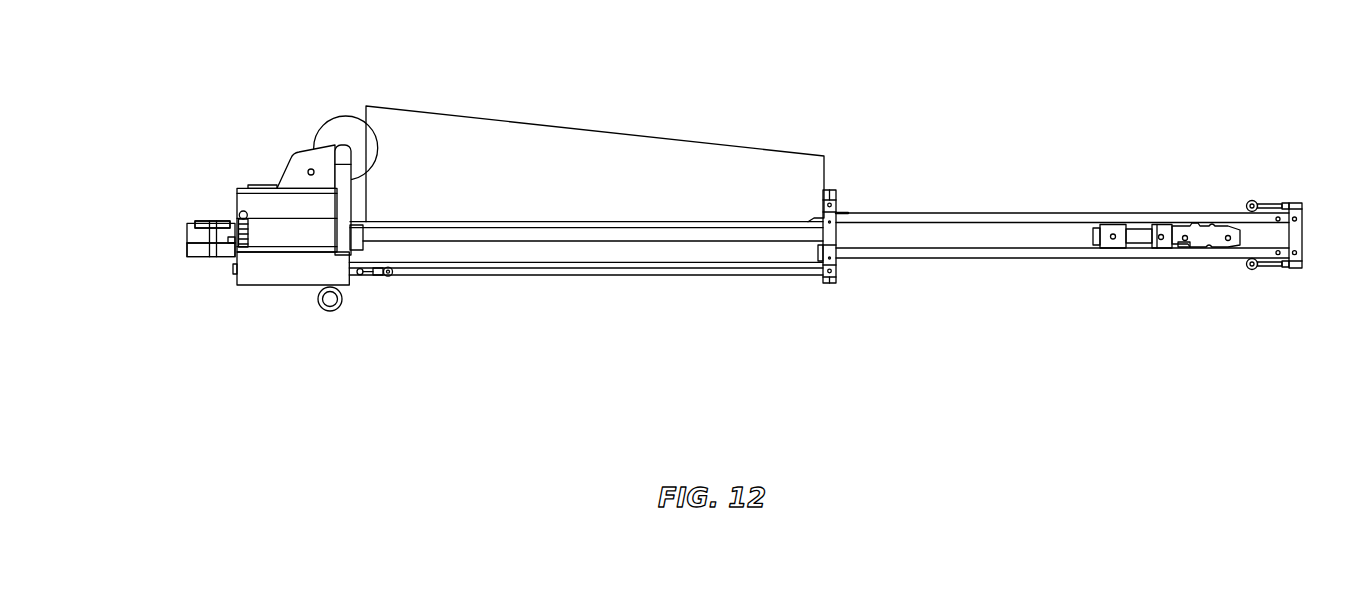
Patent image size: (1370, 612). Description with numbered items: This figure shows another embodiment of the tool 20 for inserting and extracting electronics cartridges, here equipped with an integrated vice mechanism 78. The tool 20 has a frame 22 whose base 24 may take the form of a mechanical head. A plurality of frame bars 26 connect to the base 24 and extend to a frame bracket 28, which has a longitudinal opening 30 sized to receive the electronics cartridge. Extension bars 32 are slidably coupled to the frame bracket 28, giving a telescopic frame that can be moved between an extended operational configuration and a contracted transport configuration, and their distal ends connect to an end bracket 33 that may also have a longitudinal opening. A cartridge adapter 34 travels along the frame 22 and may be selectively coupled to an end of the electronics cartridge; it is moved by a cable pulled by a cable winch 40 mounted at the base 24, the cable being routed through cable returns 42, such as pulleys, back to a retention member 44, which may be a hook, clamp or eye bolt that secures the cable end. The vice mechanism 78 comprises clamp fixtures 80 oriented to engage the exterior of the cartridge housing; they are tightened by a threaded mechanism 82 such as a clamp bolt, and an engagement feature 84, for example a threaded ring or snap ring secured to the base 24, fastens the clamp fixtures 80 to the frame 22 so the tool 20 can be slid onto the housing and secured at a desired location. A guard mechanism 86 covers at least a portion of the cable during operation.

The tool 20 is at (1070, 122).
The frame 22 is at (683, 300).
The base 24 is at (290, 286).
The frame bars 26 is at (520, 237).
The frame bracket 28 is at (831, 283).
The longitudinal opening 30 is at (197, 237).
The extension bars 32 is at (906, 220).
The end bracket 33 is at (1304, 258).
The cartridge adapter 34 is at (1185, 248).
The cable winch 40 is at (326, 108).
The cable returns 42 is at (391, 275).
The retention member 44 is at (343, 300).
The vice mechanism 78 is at (200, 210).
The clamp fixtures 80 is at (220, 220).
The threaded mechanism 82 is at (199, 255).
The engagement feature 84 is at (251, 237).
The guard mechanism 86 is at (572, 128).